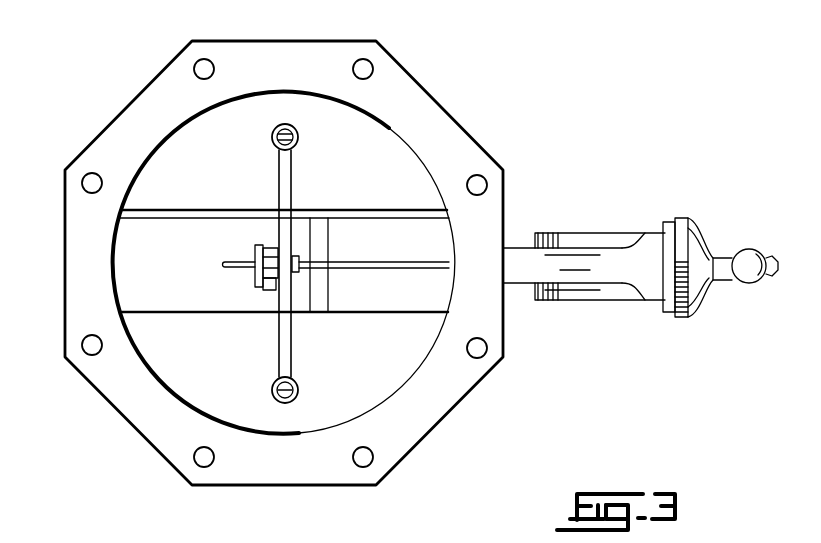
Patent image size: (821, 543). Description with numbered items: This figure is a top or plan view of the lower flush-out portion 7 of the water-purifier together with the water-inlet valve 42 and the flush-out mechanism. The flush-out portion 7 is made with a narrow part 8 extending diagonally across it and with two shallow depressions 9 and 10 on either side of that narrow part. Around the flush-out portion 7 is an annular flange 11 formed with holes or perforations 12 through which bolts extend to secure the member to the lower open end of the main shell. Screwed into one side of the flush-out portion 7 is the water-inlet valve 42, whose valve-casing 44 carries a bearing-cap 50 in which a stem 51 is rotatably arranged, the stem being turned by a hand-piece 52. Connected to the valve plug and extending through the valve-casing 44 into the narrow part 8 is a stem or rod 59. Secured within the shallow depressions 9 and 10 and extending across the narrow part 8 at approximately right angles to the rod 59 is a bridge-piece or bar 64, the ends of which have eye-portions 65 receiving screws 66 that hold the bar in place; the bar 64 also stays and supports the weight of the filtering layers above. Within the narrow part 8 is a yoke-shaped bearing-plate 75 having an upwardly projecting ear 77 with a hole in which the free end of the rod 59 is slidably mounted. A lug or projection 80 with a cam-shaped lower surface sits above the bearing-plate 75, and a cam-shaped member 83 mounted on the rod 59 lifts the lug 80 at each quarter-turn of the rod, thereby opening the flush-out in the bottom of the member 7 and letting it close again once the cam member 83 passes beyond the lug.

The lower flush-out portion 7 is at (393, 135).
The narrow part 8 is at (284, 241).
The shallow depression 9 is at (284, 174).
The shallow depression 10 is at (284, 341).
The annular flange 11 is at (132, 118).
The holes or perforations 12 is at (366, 64).
The water-inlet valve 42 is at (575, 245).
The valve-casing 44 is at (570, 258).
The bearing-cap 50 is at (707, 262).
The stem 51 is at (722, 268).
The hand-piece 52 is at (752, 262).
The stem or rod 59 is at (224, 265).
The bridge-piece or bar 64 is at (282, 185).
The eye-portions 65 is at (273, 134).
The screws 66 is at (297, 137).
The bearing-plate 75 is at (300, 290).
The upwardly projecting member or ear 77 is at (258, 250).
The lug or projection 80 is at (270, 287).
The cam-shaped member 83 is at (300, 258).